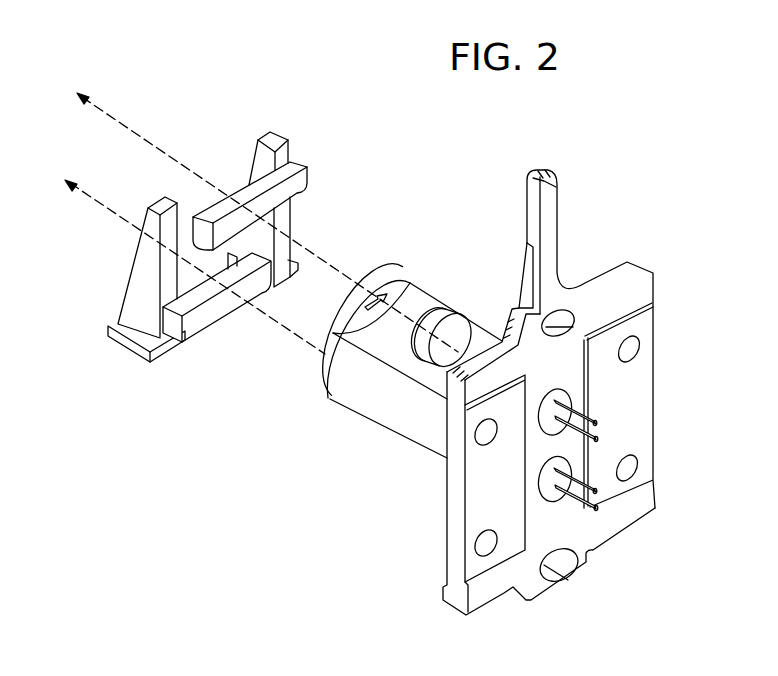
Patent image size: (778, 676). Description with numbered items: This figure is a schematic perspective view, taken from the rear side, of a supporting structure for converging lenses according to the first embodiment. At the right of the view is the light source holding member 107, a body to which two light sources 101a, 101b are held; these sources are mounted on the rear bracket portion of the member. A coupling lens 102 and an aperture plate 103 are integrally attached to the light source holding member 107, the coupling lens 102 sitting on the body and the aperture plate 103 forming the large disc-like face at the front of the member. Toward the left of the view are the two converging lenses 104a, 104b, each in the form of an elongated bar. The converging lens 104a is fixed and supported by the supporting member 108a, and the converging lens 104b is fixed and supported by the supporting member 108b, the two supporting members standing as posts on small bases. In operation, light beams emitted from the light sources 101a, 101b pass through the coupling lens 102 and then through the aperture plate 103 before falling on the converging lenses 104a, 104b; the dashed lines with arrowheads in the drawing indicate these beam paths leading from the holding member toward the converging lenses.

The light source 101a is at (561, 394).
The light source 101b is at (551, 490).
The coupling lens 102 is at (443, 303).
The aperture plate 103 is at (388, 275).
The converging lens 104a is at (297, 187).
The converging lens 104b is at (217, 307).
The light source holding member 107 is at (402, 423).
The supporting member 108a is at (268, 136).
The supporting member 108b is at (132, 300).